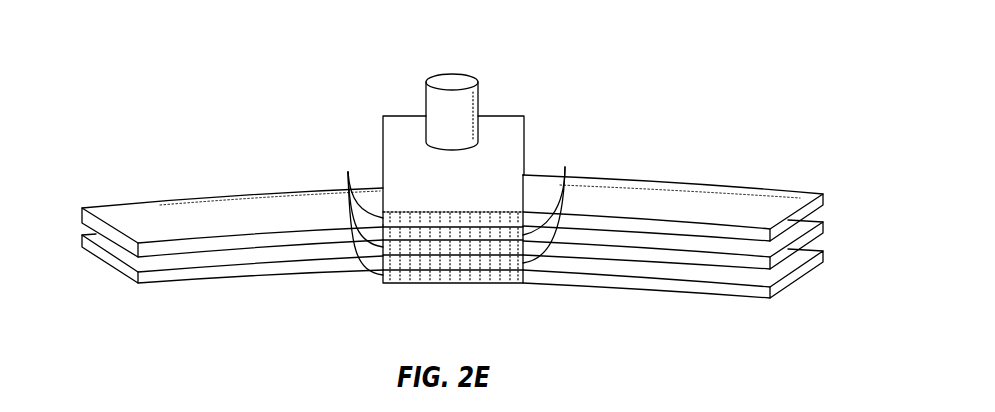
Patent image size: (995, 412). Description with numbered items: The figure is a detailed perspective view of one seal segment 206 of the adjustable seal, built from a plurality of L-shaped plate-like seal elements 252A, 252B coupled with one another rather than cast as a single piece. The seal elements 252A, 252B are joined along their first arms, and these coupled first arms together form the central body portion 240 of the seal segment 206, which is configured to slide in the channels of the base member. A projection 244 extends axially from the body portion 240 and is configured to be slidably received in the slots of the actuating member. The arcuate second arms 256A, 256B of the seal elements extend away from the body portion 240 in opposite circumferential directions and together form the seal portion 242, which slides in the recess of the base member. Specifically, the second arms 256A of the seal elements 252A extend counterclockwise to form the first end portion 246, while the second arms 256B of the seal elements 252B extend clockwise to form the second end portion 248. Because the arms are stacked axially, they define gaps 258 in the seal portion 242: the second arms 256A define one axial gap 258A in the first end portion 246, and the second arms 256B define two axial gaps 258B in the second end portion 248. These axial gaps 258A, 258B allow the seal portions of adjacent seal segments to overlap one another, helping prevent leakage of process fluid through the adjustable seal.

The seal segment 206 is at (156, 106).
The body portion 240 is at (394, 109).
The seal portion 242 is at (480, 300).
The projection 244 is at (454, 82).
The first end portion 246 is at (236, 183).
The second end portion 248 is at (656, 167).
The seal elements 252A is at (556, 202).
The seal elements 252B is at (355, 212).
The second arms 256A is at (152, 206).
The second arms 256B is at (736, 192).
The gaps 258 is at (826, 217).
The axial gap 258A is at (164, 264).
The axial gaps 258B is at (764, 251).